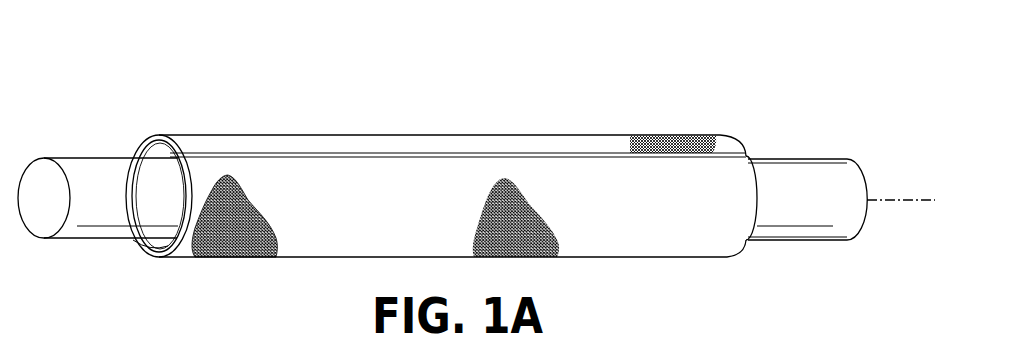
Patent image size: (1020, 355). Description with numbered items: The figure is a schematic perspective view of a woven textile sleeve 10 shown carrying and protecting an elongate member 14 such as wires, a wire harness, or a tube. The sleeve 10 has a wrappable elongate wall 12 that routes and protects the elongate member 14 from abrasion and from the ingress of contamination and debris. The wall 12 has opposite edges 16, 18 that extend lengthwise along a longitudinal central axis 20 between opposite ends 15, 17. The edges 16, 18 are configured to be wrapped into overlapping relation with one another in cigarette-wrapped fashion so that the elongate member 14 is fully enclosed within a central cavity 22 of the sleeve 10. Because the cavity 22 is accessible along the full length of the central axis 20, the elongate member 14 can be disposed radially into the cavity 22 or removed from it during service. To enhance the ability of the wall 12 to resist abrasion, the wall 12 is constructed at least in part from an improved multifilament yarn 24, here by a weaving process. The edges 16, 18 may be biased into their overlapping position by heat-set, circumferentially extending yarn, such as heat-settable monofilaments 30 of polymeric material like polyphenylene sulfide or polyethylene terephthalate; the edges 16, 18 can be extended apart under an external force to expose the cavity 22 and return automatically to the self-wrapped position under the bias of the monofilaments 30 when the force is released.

The sleeve 10 is at (508, 61).
The wrappable elongate wall 12 is at (612, 238).
The elongate member 14 is at (798, 175).
The end 15 is at (152, 258).
The edge 16 is at (165, 138).
The end 17 is at (735, 250).
The edge 18 is at (236, 156).
The central axis 20 is at (912, 197).
The central cavity 22 is at (153, 244).
The multifilament yarn 24 is at (253, 258).
The heat-settable monofilaments 30 is at (257, 207).